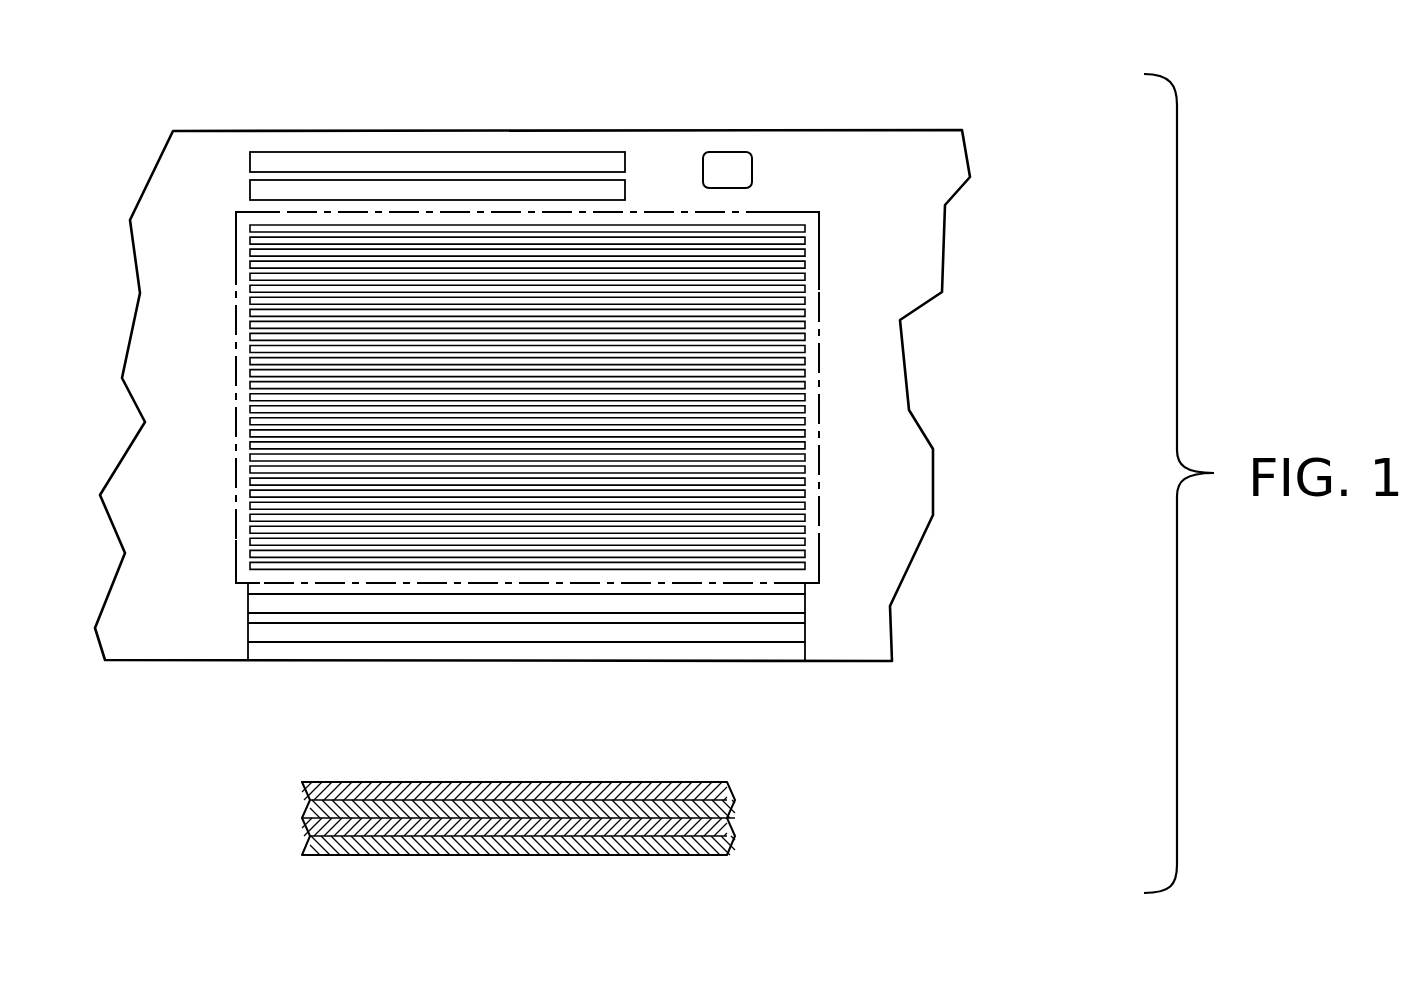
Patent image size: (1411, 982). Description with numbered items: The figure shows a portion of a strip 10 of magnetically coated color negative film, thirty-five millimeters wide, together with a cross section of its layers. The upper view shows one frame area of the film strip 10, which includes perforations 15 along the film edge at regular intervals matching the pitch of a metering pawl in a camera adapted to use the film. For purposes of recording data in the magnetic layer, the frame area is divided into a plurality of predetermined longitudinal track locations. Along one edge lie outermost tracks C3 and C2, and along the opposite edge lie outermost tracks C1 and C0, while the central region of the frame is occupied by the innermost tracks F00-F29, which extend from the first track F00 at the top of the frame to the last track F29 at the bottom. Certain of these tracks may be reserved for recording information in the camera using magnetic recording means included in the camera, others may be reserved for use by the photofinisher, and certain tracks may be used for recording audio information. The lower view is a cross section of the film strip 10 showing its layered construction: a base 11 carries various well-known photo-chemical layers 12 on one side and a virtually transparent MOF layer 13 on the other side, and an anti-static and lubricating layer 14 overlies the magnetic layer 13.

The film strip 10 is at (810, 130).
The perforations 15 is at (728, 152).
The outermost track C3 is at (472, 160).
The outermost track C2 is at (575, 185).
The outermost track C1 is at (462, 632).
The outermost track C0 is at (372, 603).
The innermost track F00 is at (818, 214).
The innermost track F29 is at (820, 545).
The innermost tracks F00-F29 is at (687, 356).
The photo-chemical layers 12 is at (733, 790).
The base 11 is at (735, 808).
The virtually transparent MOF layer 13 is at (735, 827).
The anti-static and lubricating layer 14 is at (730, 847).